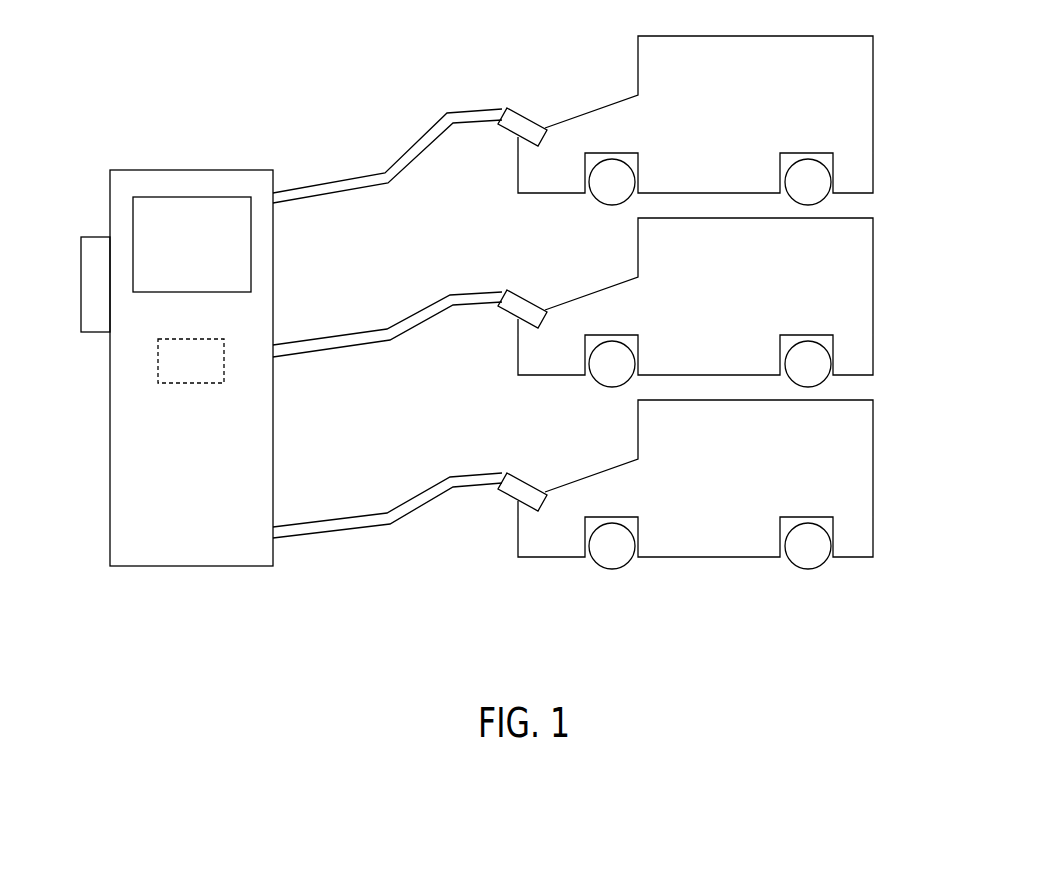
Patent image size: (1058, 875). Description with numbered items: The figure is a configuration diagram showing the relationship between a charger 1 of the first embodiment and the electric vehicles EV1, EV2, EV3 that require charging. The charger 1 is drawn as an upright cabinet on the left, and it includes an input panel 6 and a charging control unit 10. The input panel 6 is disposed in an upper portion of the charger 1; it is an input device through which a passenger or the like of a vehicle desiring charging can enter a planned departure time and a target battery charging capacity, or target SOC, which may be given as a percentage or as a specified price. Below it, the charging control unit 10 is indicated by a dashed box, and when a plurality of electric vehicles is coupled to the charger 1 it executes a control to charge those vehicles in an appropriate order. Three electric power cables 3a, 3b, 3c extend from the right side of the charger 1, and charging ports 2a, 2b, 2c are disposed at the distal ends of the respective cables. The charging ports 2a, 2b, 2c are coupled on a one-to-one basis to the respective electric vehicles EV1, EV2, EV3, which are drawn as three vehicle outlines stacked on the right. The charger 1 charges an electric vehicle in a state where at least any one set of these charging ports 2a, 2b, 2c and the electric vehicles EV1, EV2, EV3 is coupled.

The charger 1 is at (152, 170).
The input panel 6 is at (133, 210).
The charging control unit 10 is at (158, 363).
The charging port 2a is at (507, 108).
The charging port 2b is at (507, 290).
The charging port 2c is at (507, 473).
The electric power cable 3a is at (413, 147).
The electric power cable 3b is at (413, 318).
The electric power cable 3c is at (413, 500).
The electric vehicle EV1 is at (873, 126).
The electric vehicle EV2 is at (738, 302).
The electric vehicle EV3 is at (738, 484).